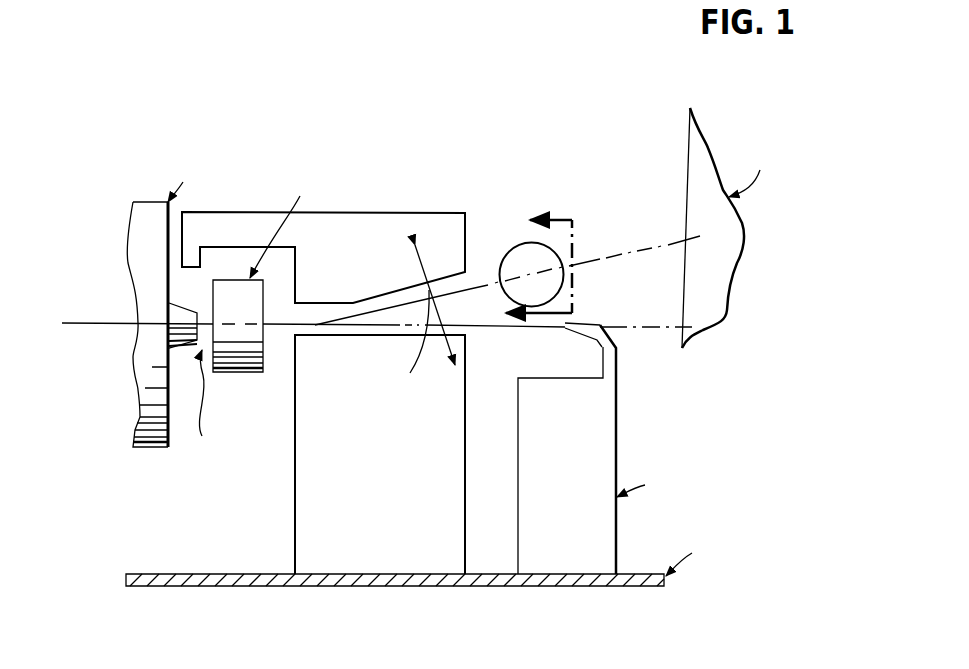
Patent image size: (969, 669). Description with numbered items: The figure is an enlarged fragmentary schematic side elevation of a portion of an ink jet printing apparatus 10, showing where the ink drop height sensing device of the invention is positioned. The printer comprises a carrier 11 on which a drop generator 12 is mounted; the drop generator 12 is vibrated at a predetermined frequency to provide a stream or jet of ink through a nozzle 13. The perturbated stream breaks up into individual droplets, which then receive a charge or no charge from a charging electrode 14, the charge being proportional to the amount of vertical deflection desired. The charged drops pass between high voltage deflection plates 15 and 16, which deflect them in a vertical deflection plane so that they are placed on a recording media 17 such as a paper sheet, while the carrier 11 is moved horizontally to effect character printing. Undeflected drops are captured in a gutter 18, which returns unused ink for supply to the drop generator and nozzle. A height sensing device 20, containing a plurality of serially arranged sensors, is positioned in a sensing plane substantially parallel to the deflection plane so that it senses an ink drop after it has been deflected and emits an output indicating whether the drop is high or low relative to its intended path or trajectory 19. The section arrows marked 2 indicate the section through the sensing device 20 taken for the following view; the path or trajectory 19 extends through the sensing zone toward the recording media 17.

The ink jet printing apparatus 10 is at (90, 245).
The carrier 11 is at (622, 584).
The drop generator 12 is at (145, 202).
The nozzle 13 is at (190, 350).
The charging electrode 14 is at (250, 375).
The deflection plate 15 is at (410, 222).
The deflection plate 16 is at (458, 402).
The recording media 17 is at (683, 145).
The gutter 18 is at (610, 425).
The path or trajectory 19 is at (604, 257).
The height sensing device 20 is at (507, 247).
The section line 2- 2 is at (530, 256).